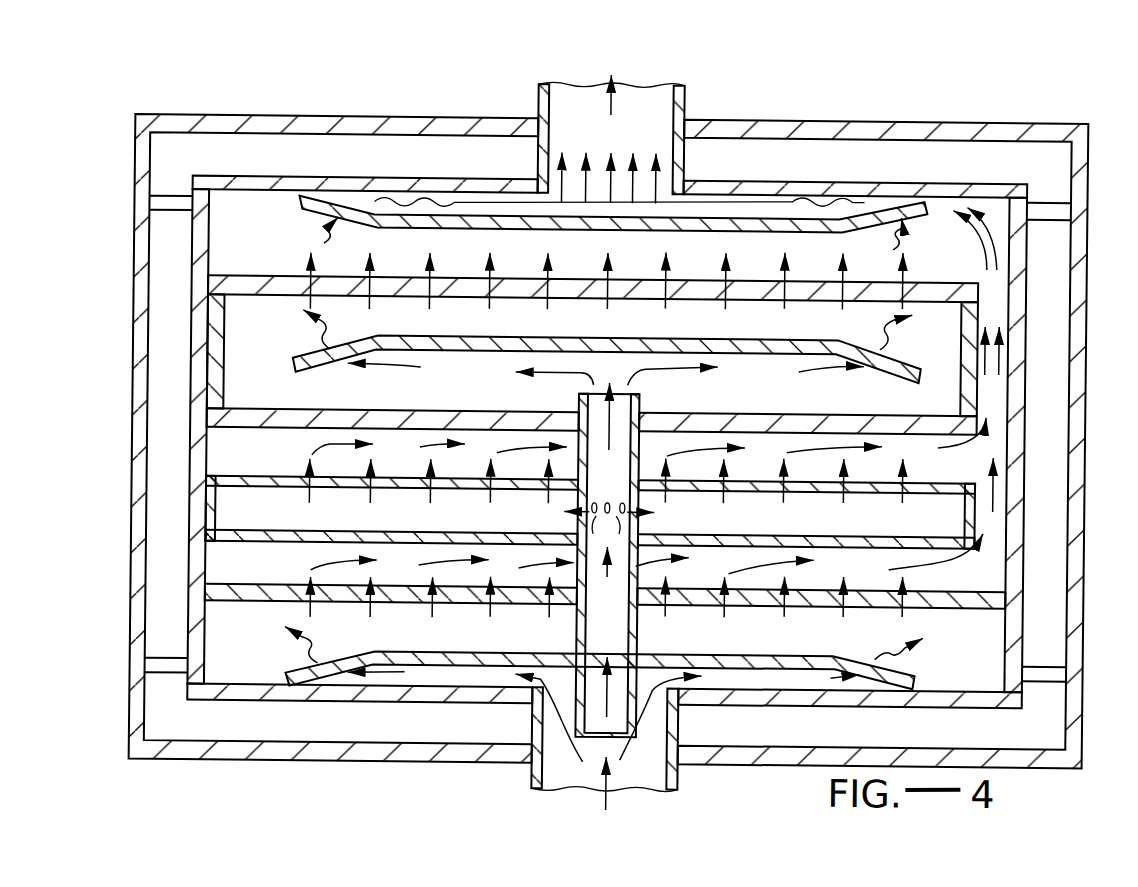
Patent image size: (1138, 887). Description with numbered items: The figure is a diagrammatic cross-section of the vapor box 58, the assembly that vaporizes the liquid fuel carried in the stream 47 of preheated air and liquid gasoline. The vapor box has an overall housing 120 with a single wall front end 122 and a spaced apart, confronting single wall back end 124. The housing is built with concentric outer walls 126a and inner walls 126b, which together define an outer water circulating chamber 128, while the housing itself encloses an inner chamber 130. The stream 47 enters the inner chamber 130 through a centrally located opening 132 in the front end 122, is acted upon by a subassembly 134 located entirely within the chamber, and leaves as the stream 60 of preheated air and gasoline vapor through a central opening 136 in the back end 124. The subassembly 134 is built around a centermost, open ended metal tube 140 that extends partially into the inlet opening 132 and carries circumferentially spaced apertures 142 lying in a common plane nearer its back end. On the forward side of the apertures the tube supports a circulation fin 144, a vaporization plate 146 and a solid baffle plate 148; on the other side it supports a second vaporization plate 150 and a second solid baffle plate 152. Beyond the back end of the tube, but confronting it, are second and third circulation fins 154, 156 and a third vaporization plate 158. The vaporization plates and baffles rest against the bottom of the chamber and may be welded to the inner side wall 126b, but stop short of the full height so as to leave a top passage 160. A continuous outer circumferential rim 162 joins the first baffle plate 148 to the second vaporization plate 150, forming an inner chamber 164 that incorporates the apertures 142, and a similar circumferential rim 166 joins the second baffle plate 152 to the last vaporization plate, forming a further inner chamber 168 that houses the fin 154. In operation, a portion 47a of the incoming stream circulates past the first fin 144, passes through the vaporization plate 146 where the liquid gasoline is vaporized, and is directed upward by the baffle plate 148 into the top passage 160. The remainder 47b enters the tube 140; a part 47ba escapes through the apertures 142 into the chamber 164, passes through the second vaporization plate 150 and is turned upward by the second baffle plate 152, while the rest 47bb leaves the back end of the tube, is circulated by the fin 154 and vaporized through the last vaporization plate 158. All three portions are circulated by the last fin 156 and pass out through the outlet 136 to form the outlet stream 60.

The vapor box 58 is at (1088, 112).
The outlet stream 60 is at (683, 102).
The stream of preheated air and liquid gasoline fuel 47 is at (534, 771).
The stream portion 47a is at (998, 488).
The stream portion 47b is at (610, 672).
The stream part 47ba is at (559, 513).
The stream portion 47bb is at (309, 276).
The housing 120 is at (1006, 176).
The front end 122 is at (925, 699).
The back end 124 is at (885, 178).
The outer walls 126a is at (139, 340).
The inner walls 126b is at (188, 283).
The outer water circulating chamber 128 is at (161, 520).
The inner chamber 130 is at (259, 202).
The opening 132 is at (553, 701).
The subassembly 134 is at (236, 226).
The central opening 136 is at (549, 181).
The metal tube 140 is at (640, 717).
The apertures 142 is at (618, 508).
The circulation fin 144 is at (449, 658).
The vaporization plate 146 is at (793, 610).
The solid baffle plate 148 is at (846, 541).
The second vaporization plate 150 is at (920, 482).
The second solid baffle plate 152 is at (812, 423).
The second circulation fin 154 is at (500, 351).
The third circulation fin 156 is at (316, 211).
The third vaporization plate 158 is at (630, 292).
The top passage 160 is at (988, 444).
The outer circumferential rim 162 is at (974, 514).
The inner chamber 164 is at (311, 521).
The circumferential rim 166 is at (965, 376).
The inner chamber 168 is at (224, 374).